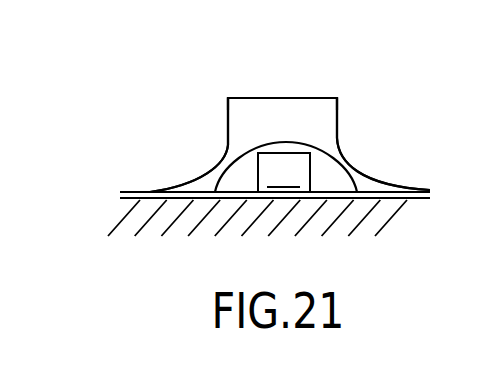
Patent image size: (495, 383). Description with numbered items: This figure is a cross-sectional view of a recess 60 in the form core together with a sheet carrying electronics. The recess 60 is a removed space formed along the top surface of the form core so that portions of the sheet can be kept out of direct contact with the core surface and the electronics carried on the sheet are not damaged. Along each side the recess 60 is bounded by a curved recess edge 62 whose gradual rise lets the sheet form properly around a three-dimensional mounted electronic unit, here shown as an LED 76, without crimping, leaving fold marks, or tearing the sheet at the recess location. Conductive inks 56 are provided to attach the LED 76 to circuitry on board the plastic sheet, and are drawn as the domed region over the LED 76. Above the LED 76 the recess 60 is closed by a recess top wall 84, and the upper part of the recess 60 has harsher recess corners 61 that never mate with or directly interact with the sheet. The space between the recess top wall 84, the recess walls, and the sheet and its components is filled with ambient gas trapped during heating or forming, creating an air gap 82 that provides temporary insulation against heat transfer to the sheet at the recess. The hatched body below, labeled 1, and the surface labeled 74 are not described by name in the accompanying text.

The substrate 1 is at (132, 220).
The conductive inks 56 is at (325, 158).
The recess 60 is at (316, 78).
The recess corners 61 is at (228, 98).
The recess edge 62 is at (209, 169).
The surface 74 is at (150, 191).
The LED 76 is at (284, 172).
The air gap 82 is at (283, 127).
The recess top wall 84 is at (296, 97).